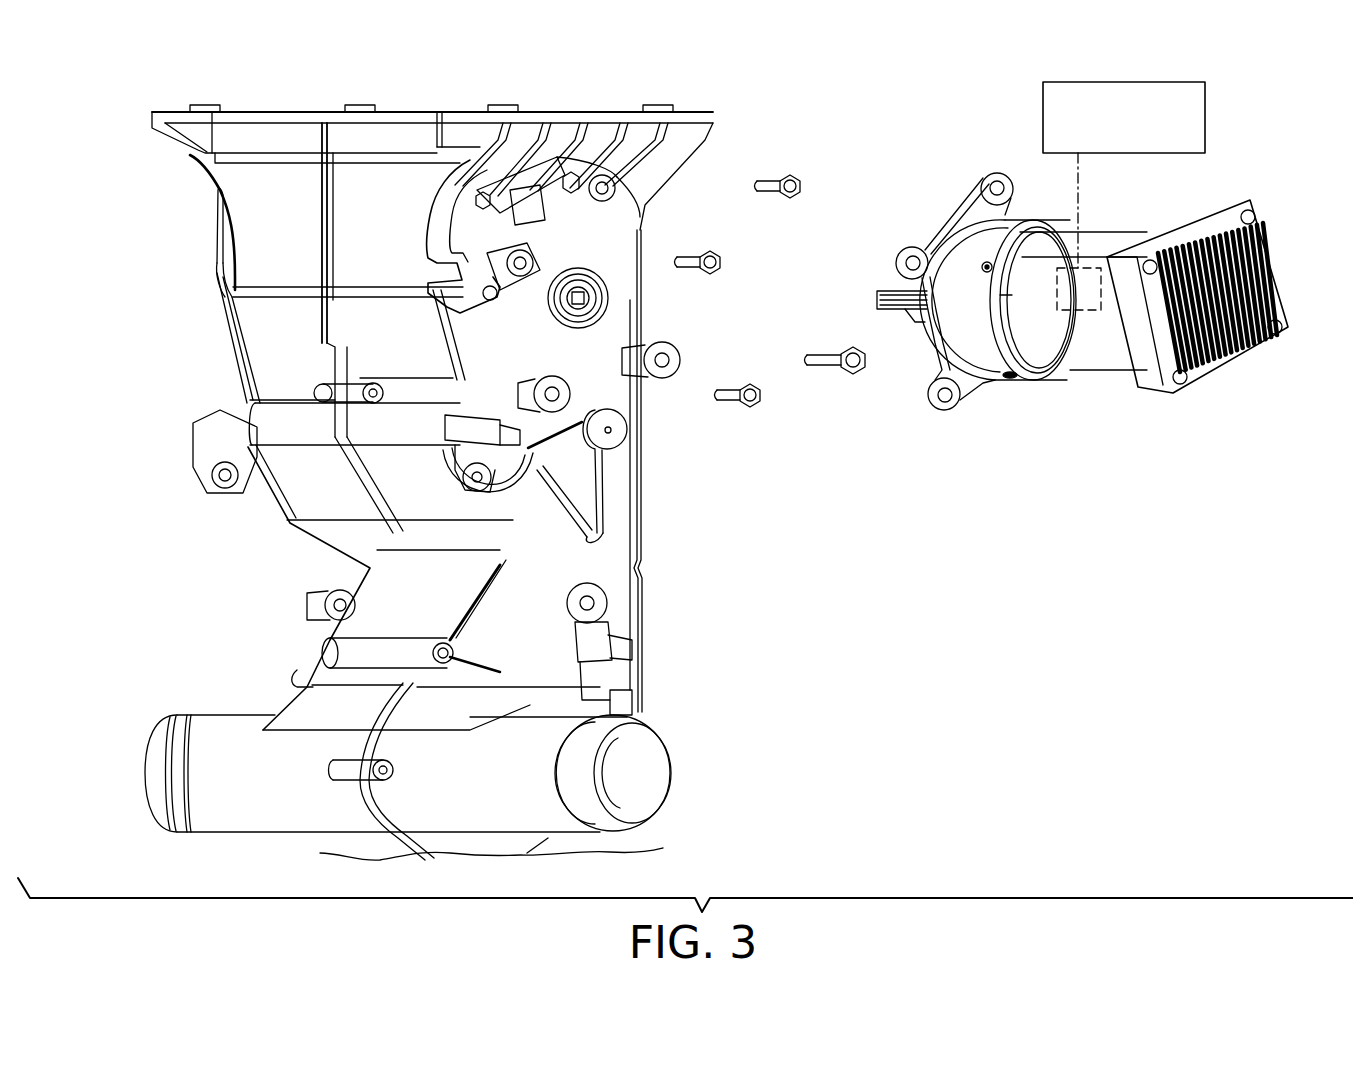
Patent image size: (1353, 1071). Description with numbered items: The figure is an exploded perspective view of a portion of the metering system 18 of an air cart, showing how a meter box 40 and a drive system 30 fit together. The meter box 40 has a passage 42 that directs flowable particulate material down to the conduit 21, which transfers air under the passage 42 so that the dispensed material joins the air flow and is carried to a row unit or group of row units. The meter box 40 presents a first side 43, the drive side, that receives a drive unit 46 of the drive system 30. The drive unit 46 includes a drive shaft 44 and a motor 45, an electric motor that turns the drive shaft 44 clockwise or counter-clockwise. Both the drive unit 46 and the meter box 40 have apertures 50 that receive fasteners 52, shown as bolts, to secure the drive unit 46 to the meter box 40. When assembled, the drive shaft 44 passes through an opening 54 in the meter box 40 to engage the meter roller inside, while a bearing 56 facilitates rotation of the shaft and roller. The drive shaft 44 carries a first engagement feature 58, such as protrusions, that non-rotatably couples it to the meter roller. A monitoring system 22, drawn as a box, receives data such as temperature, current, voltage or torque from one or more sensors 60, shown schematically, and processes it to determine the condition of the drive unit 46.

The metering system 18 is at (936, 146).
The conduit 21 is at (545, 808).
The monitoring system 22 is at (1207, 117).
The drive system 30 is at (893, 442).
The meter box 40 is at (248, 92).
The passage 42 is at (620, 525).
The first side 43 is at (672, 492).
The drive shaft 44 is at (880, 300).
The motor 45 is at (1098, 355).
The drive unit 46 is at (1048, 410).
The apertures 50 is at (535, 258).
The fasteners 52 is at (682, 258).
The opening 54 is at (596, 300).
The bearing 56 is at (582, 328).
The first engagement feature 58 is at (903, 313).
The sensors 60 is at (1095, 262).